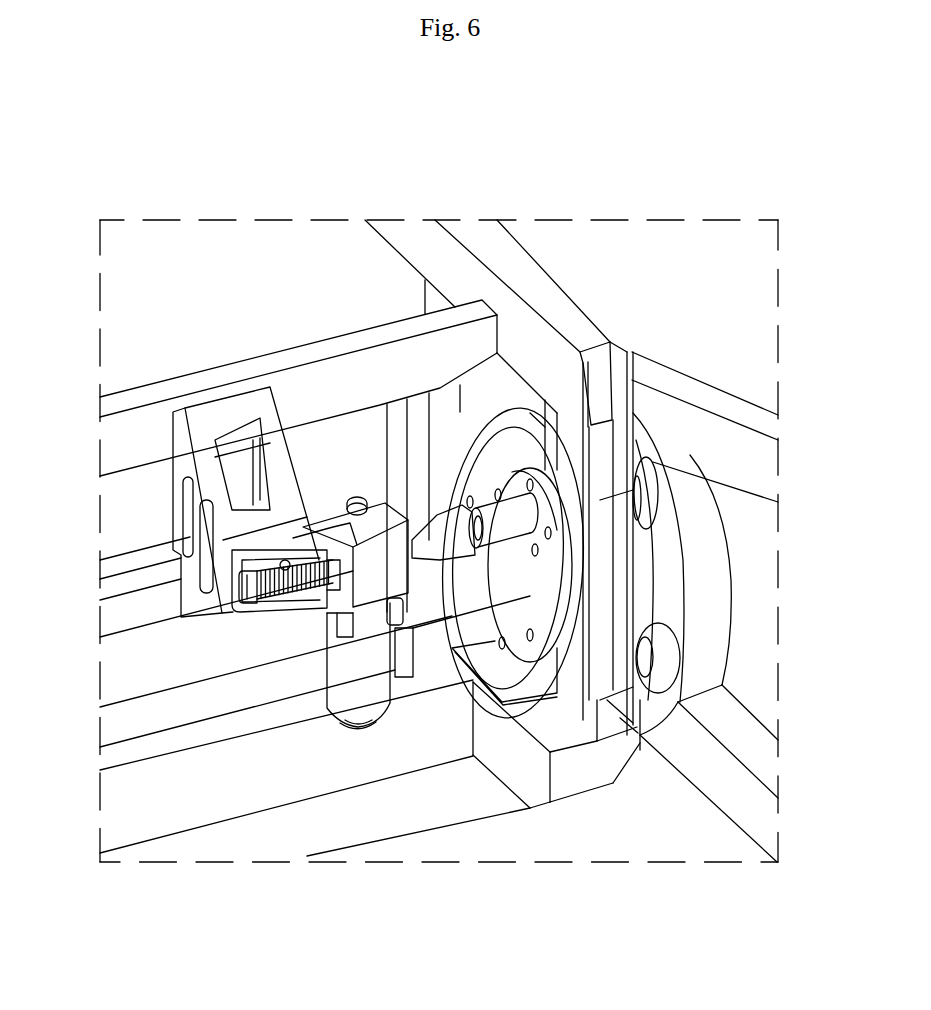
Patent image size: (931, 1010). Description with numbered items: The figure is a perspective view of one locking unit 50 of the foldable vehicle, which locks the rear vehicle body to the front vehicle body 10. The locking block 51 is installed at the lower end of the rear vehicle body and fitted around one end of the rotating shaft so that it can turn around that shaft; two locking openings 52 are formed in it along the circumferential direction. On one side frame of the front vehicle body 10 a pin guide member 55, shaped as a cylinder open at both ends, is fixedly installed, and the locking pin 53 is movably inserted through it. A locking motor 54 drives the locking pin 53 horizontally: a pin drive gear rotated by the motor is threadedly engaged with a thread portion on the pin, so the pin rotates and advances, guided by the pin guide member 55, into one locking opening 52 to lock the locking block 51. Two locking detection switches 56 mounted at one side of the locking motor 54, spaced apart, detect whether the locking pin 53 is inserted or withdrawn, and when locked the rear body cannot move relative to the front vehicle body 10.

The locking unit 50 is at (396, 215).
The front vehicle body 10 is at (617, 377).
The pin guide member 55 is at (558, 490).
The locking openings 52 is at (645, 502).
The locking block 51 is at (717, 650).
The locking detection switches 56 is at (250, 578).
The locking motor 54 is at (365, 702).
The locking pin 53 is at (457, 545).